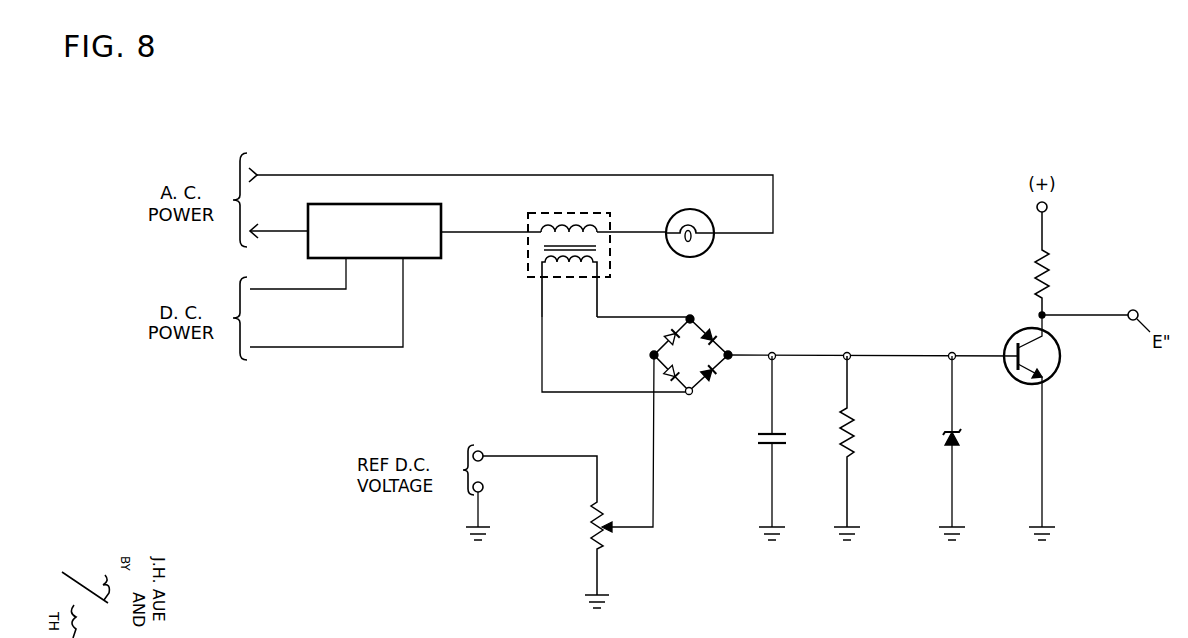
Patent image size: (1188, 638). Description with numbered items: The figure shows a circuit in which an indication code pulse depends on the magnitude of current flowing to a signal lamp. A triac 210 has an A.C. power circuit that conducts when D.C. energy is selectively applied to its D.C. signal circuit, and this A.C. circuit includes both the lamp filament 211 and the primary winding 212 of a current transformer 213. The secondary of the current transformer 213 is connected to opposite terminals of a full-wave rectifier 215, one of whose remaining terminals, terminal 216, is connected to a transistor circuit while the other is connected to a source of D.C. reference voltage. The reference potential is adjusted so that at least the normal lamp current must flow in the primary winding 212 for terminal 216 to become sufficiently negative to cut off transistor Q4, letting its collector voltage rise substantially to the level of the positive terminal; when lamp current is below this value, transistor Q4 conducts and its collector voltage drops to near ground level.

The triac 210 is at (425, 204).
The lamp filament 211 is at (705, 251).
The primary winding 212 is at (572, 226).
The current transformer 213 is at (528, 256).
The full-wave rectifier 215 is at (698, 325).
The terminal 216 is at (731, 354).
The transistor Q4 is at (1058, 369).